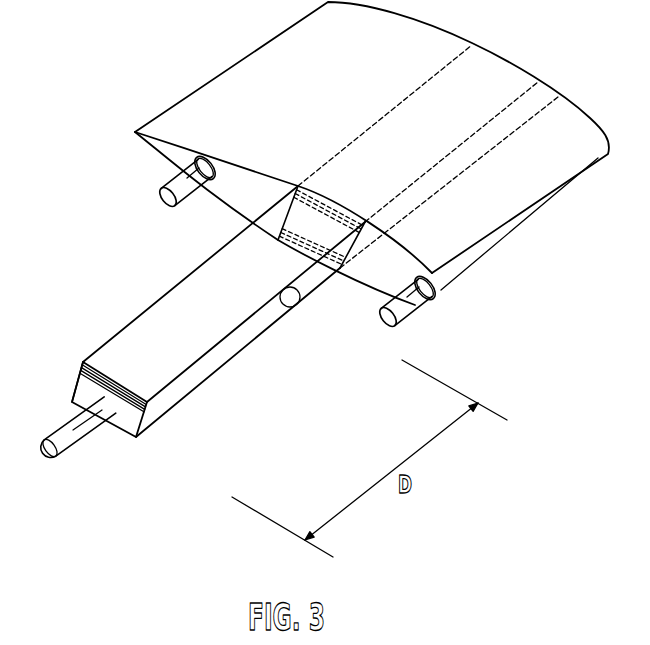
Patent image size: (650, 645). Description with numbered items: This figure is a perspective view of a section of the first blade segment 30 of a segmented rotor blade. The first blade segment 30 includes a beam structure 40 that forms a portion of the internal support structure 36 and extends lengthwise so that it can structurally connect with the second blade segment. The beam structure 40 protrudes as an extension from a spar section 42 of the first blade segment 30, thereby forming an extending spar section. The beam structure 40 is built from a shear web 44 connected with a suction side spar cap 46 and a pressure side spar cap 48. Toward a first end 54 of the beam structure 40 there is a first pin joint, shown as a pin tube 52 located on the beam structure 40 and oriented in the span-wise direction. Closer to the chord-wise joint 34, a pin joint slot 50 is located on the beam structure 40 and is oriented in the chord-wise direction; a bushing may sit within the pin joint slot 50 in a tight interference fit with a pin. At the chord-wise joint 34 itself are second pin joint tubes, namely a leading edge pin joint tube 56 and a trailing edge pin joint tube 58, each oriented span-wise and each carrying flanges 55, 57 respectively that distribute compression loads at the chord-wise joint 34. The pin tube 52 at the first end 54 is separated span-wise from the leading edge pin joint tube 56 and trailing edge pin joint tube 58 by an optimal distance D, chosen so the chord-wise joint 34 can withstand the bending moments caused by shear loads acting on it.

The first blade segment 30 is at (346, 153).
The chord-wise joint 34 is at (160, 158).
The internal support structure 36 is at (196, 334).
The beam structure 40 is at (110, 340).
The spar section 42 is at (503, 66).
The shear web 44 is at (238, 352).
The suction side spar cap 46 is at (196, 284).
The pressure side spar cap 48 is at (82, 362).
The pin joint slot 50 is at (296, 299).
The pin tube 52 is at (84, 444).
The first end 54 is at (150, 436).
The flanges 55 is at (430, 268).
The leading edge pin joint tube 56 is at (419, 308).
The flanges 57 is at (212, 155).
The trailing edge pin joint tube 58 is at (187, 175).